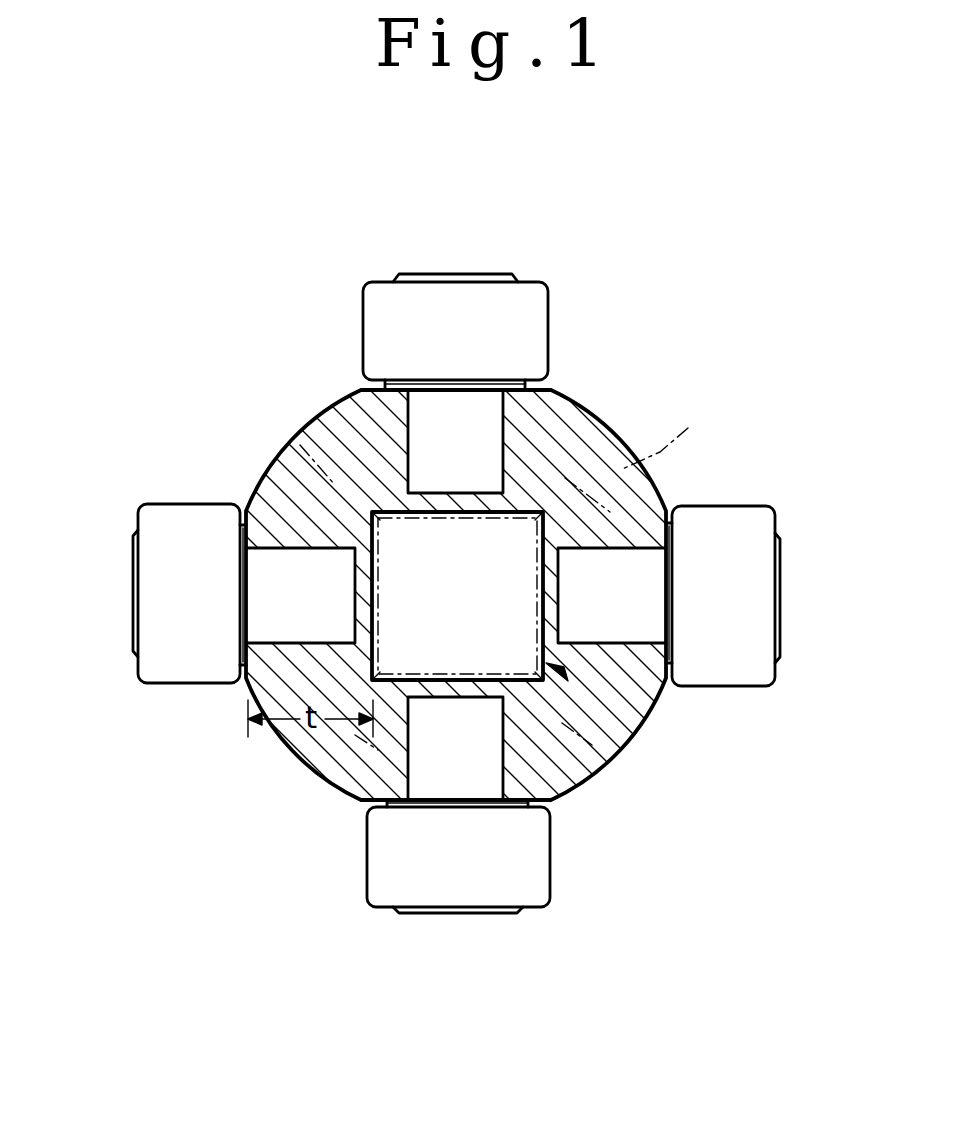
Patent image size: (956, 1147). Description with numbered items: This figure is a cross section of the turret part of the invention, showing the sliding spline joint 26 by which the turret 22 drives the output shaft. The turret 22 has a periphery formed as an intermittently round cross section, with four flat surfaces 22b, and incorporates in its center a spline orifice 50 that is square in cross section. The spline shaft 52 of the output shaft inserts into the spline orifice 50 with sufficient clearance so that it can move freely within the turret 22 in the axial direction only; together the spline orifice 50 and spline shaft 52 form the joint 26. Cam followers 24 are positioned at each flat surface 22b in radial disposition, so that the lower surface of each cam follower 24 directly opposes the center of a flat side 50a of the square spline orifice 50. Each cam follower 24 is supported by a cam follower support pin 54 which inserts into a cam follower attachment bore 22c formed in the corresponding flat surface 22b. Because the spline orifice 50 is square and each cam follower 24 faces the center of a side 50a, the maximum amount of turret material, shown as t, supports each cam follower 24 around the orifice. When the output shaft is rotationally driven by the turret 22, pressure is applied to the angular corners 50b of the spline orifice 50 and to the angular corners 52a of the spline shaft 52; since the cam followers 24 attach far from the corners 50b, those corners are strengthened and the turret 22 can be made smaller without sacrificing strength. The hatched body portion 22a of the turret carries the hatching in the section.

The turret 22 is at (306, 392).
The hatched body portion 22a is at (605, 465).
The flat surface 22b is at (548, 360).
The cam follower attachment bore 22c is at (565, 470).
The cam follower 24 is at (551, 300).
The sliding spline joint 26 is at (562, 675).
The spline orifice 50 is at (370, 508).
The flat side of spline orifice 50a is at (380, 512).
The angular corner of spline orifice 50b is at (372, 513).
The spline shaft 52 is at (676, 435).
The angular corner of spline shaft 52a is at (300, 458).
The cam follower support pin 54 is at (303, 560).